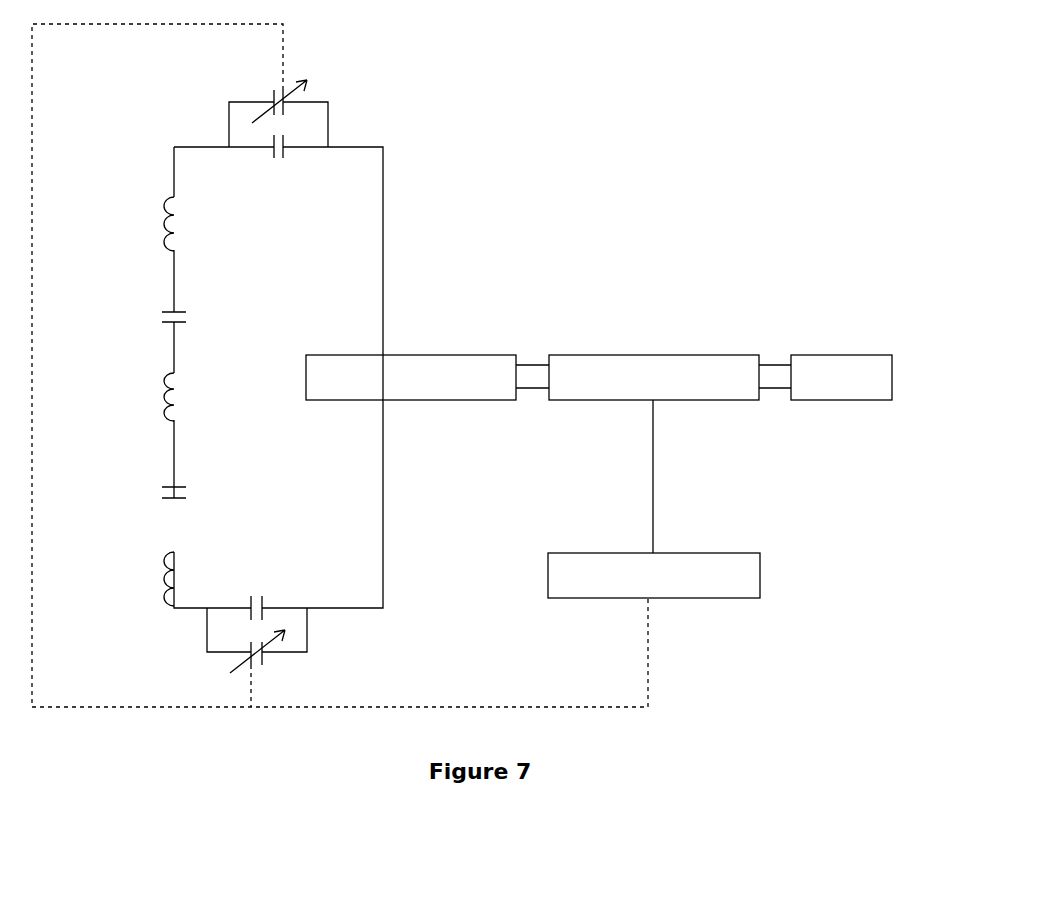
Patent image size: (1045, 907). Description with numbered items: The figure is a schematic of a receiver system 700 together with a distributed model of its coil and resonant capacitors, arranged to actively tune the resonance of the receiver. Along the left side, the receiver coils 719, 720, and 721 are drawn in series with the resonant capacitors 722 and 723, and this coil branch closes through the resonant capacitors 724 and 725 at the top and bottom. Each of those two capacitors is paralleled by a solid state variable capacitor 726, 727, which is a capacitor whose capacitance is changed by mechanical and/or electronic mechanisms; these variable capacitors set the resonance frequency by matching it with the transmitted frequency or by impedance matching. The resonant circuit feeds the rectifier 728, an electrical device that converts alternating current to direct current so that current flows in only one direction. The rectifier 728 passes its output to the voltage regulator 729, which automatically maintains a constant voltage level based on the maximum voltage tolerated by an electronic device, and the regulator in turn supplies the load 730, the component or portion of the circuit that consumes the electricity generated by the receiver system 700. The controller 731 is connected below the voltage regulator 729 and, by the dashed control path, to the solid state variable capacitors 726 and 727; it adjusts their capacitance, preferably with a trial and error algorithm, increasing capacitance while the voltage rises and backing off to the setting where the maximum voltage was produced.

The receiver system 700 is at (868, 103).
The receiver coil 719 is at (182, 230).
The receiver coil 720 is at (182, 400).
The receiver coil 721 is at (182, 575).
The resonant capacitor 722 is at (195, 312).
The resonant capacitor 723 is at (195, 487).
The resonant capacitor 724 is at (284, 155).
The resonant capacitor 725 is at (263, 598).
The solid state variable capacitor 726 is at (307, 92).
The solid state variable capacitor 727 is at (263, 660).
The rectifier 728 is at (487, 354).
The voltage regulator 729 is at (663, 354).
The load 730 is at (877, 354).
The controller 731 is at (761, 563).